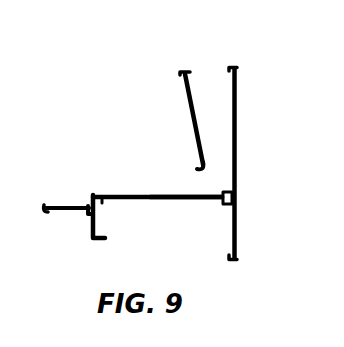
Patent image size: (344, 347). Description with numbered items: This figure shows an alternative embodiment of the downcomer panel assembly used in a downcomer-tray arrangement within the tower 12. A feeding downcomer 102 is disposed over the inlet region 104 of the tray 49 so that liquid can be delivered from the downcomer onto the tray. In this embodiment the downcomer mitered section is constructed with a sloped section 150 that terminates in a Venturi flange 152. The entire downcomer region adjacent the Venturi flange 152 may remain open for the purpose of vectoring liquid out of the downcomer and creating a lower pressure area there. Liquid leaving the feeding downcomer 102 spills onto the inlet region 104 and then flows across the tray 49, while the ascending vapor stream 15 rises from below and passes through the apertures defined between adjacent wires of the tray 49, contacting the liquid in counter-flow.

The tower 12 is at (245, 170).
The ascending vapor stream 15 is at (138, 210).
The tray 49 is at (69, 218).
The feeding downcomer 102 is at (182, 118).
The inlet region 104 is at (193, 210).
The sloped section 150 is at (196, 90).
The Venturi flange 152 is at (190, 165).